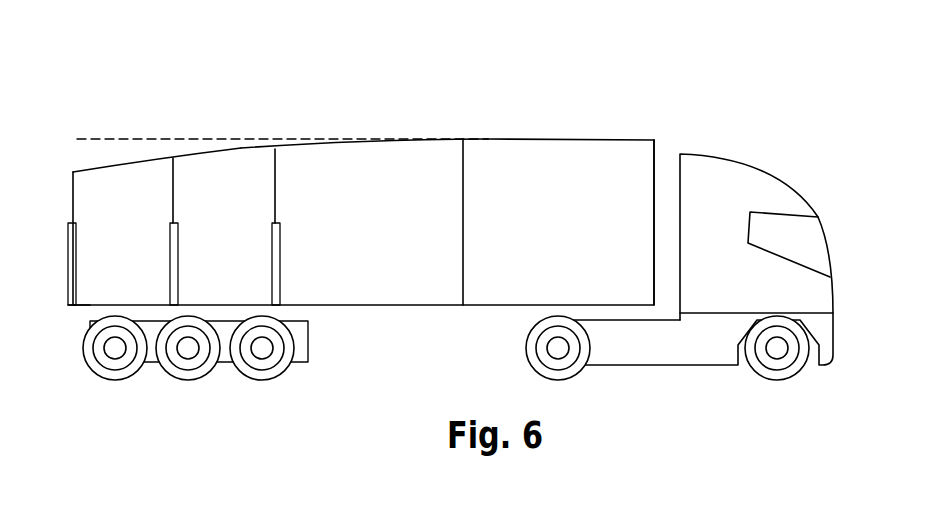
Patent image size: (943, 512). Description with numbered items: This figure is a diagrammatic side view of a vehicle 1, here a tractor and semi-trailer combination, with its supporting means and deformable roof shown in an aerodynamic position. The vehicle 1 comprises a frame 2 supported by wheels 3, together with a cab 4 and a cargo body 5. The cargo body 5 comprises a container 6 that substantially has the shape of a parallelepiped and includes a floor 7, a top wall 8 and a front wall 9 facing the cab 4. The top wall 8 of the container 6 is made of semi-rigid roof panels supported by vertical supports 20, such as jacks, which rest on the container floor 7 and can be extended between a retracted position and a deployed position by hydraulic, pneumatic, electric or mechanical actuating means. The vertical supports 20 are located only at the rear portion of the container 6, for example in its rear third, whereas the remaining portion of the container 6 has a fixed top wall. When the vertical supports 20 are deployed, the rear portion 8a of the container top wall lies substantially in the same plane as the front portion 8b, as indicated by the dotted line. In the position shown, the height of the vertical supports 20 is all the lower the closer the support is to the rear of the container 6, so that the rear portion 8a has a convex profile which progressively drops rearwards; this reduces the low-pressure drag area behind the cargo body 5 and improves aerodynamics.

The vehicle 1 is at (752, 104).
The frame 2 is at (690, 343).
The wheels 3 is at (113, 373).
The cab 4 is at (758, 188).
The cargo body 5 is at (574, 106).
The container 6 is at (371, 196).
The floor 7 is at (83, 308).
The top wall 8 is at (252, 78).
The rear portion of the container top wall 8a is at (241, 147).
The front portion of the container top wall 8b is at (488, 139).
The front wall 9 is at (655, 163).
The vertical supports 20 is at (73, 197).